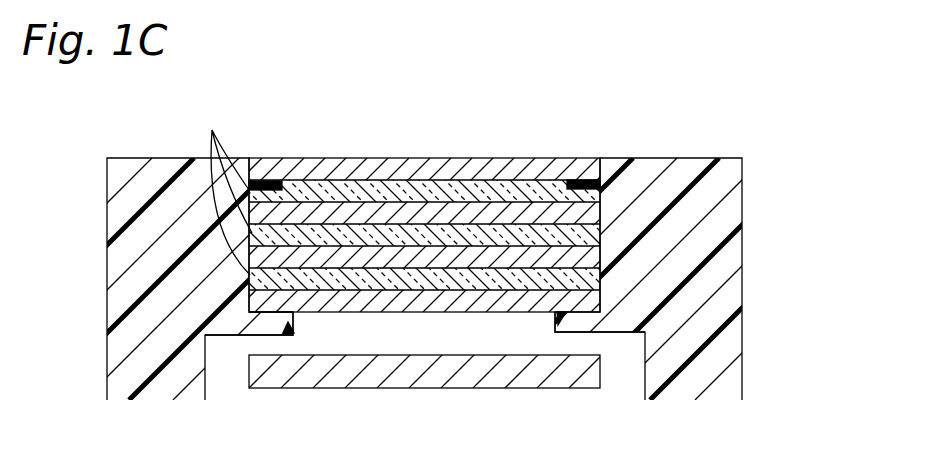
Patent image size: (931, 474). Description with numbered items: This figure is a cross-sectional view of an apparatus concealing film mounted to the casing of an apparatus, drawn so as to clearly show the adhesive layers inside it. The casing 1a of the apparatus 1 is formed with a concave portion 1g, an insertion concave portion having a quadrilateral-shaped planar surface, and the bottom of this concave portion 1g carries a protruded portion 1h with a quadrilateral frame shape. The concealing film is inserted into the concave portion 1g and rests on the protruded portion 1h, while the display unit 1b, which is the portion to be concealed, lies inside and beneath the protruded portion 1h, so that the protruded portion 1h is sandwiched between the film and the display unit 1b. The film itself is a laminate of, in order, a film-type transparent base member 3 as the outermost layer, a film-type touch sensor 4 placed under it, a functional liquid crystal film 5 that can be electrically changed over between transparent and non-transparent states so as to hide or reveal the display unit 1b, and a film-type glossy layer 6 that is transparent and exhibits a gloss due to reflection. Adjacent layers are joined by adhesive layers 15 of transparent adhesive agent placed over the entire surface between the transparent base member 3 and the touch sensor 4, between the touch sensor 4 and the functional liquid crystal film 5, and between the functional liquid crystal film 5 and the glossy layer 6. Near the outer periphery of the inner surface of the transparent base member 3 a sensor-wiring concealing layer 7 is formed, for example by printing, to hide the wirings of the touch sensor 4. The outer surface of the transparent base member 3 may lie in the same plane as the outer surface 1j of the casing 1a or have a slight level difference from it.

The apparatus 1 is at (465, 273).
The casing 1a is at (138, 178).
The display unit 1b is at (496, 370).
The concave portion 1g is at (597, 188).
The protruded portion 1h is at (287, 334).
The outer surface of the casing 1j is at (177, 158).
The transparent base member 3 is at (441, 203).
The touch sensor 4 is at (590, 212).
The functional liquid crystal film 5 is at (590, 257).
The glossy layer 6 is at (590, 300).
The sensor-wiring concealing layer 7 is at (270, 181).
The adhesive layer 15 is at (225, 190).